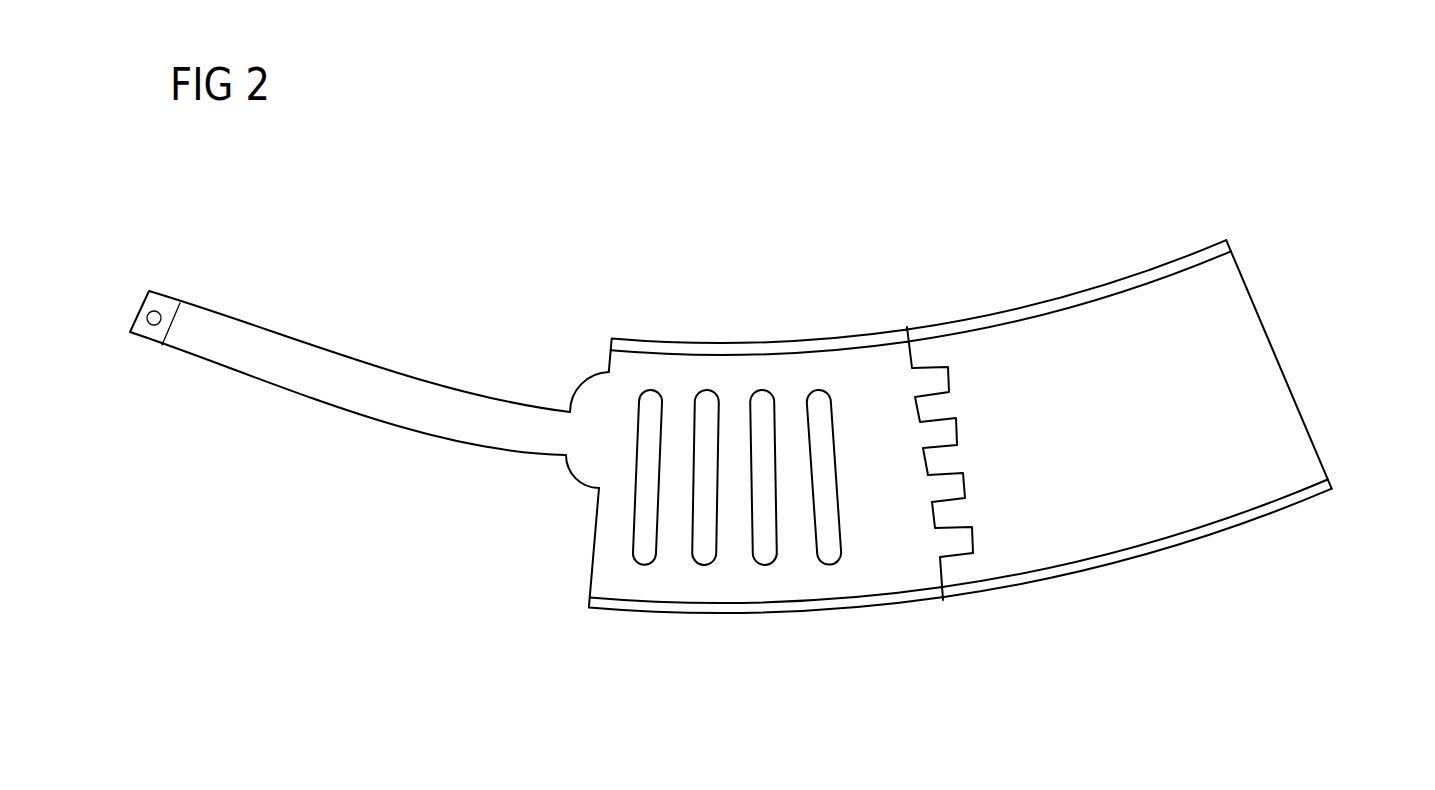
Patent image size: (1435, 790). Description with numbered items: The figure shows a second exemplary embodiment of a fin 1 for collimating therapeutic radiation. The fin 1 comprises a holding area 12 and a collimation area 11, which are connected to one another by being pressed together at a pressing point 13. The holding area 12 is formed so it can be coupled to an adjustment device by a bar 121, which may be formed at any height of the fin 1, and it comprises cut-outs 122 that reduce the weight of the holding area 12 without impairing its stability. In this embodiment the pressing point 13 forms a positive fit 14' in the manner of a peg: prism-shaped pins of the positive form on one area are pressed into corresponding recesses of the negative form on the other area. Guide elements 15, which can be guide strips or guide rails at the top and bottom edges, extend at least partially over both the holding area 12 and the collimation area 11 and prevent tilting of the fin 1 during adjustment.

The fin 1 is at (345, 297).
The collimation area 11 is at (1067, 287).
The holding area 12 is at (736, 335).
The bar 121 is at (332, 393).
The cut-out 122 is at (705, 555).
The pressing point 13 is at (906, 323).
The positive fit 14' is at (1001, 486).
The guide element 15 is at (1228, 244).